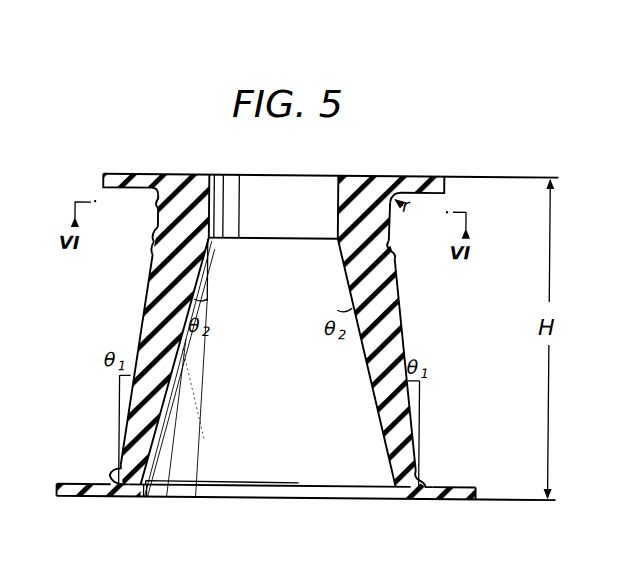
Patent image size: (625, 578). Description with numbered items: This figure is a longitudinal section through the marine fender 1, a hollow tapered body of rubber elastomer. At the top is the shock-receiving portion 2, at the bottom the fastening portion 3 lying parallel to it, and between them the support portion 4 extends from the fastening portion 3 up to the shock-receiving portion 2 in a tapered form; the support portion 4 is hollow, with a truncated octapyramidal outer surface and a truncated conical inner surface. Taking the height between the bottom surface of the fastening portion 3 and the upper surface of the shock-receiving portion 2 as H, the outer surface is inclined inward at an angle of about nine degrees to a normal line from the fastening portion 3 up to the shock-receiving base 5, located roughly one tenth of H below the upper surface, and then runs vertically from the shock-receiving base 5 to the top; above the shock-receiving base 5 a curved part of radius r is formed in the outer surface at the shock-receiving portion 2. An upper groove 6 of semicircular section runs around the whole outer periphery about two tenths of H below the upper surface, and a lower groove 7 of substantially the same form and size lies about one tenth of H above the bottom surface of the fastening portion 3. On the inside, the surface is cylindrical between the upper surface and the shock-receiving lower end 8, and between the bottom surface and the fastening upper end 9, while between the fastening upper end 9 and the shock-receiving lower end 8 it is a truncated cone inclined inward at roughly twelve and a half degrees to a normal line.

The marine fender 1 is at (429, 167).
The shock-receiving portion 2 is at (185, 176).
The fastening portion 3 is at (85, 499).
The support portion 4 is at (147, 312).
The shock-receiving base 5 is at (153, 205).
The upper groove 6 is at (150, 240).
The lower groove 7 is at (114, 476).
The shock-receiving lower end 8 is at (213, 242).
The fastening upper end 9 is at (150, 485).